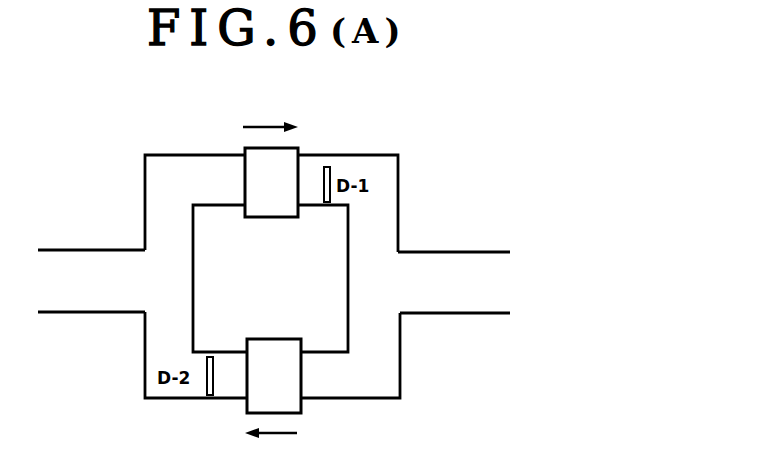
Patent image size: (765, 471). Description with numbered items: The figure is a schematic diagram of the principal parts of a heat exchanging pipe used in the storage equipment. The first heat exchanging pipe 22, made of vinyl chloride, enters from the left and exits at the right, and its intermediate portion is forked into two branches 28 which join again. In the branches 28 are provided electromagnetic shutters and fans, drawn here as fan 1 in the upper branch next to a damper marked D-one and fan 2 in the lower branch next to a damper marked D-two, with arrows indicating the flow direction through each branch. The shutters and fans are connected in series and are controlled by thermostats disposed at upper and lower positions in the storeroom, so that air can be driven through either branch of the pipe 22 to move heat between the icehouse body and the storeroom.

The first heat exchanging pipe 22 is at (73, 277).
The branches 28 is at (387, 168).
The FAN 1 is at (271, 182).
The FAN 2 is at (274, 376).